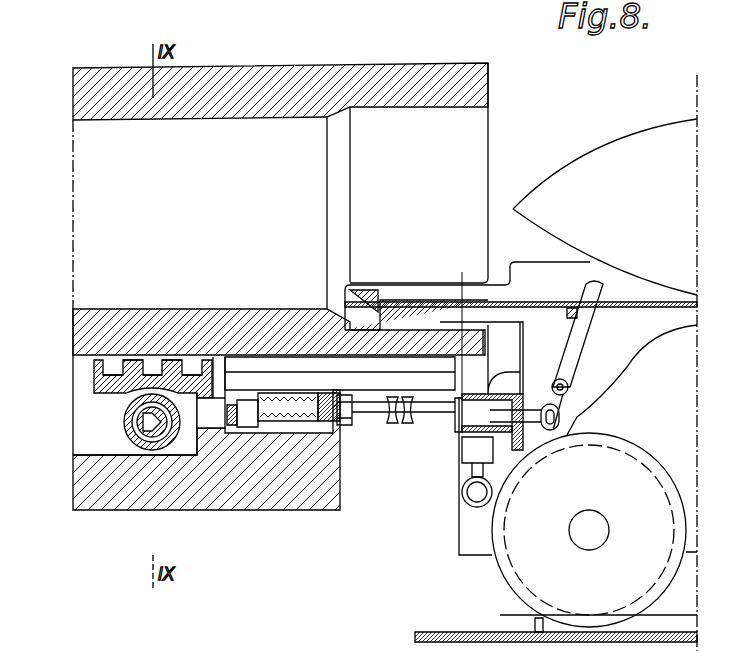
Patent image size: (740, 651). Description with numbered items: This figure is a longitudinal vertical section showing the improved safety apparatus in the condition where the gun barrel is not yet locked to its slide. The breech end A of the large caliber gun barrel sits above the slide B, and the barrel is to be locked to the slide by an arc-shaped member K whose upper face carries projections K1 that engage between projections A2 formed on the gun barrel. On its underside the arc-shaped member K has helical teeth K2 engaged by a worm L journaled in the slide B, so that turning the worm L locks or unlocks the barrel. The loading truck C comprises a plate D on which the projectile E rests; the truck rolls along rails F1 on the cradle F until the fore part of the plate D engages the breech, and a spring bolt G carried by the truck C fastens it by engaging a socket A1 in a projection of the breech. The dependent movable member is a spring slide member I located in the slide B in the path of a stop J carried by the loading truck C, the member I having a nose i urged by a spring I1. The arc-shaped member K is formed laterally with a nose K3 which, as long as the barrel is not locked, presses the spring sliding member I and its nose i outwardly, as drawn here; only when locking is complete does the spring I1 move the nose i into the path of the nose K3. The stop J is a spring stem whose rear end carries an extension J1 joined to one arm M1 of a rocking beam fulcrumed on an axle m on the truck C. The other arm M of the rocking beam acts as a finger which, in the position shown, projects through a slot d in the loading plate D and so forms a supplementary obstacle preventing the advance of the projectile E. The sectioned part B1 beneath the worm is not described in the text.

The breech end of gun barrel A is at (470, 92).
The socket A1 is at (452, 325).
The projections on gun barrel A2 is at (112, 375).
The arc-shaped member K is at (105, 383).
The projections of arc-shaped member K1 is at (132, 368).
The helical teeth K2 is at (133, 398).
The nose of arc-shaped member K3 is at (210, 422).
The worm L is at (140, 431).
The slide B is at (189, 450).
The shaft B1 is at (153, 437).
The nose i is at (247, 420).
The spring I1 is at (284, 437).
The spring slide member I is at (375, 414).
The stop J is at (430, 415).
The spring bolt G is at (468, 405).
The loading truck C is at (561, 438).
The plate D is at (402, 307).
The slot d is at (612, 309).
The projectile E is at (649, 152).
The arm of rocking beam M is at (578, 333).
The axle m is at (569, 384).
The rocking beam arm M1 is at (565, 421).
The extension J1 is at (532, 442).
The cradle F is at (444, 633).
The rails F1 is at (535, 626).